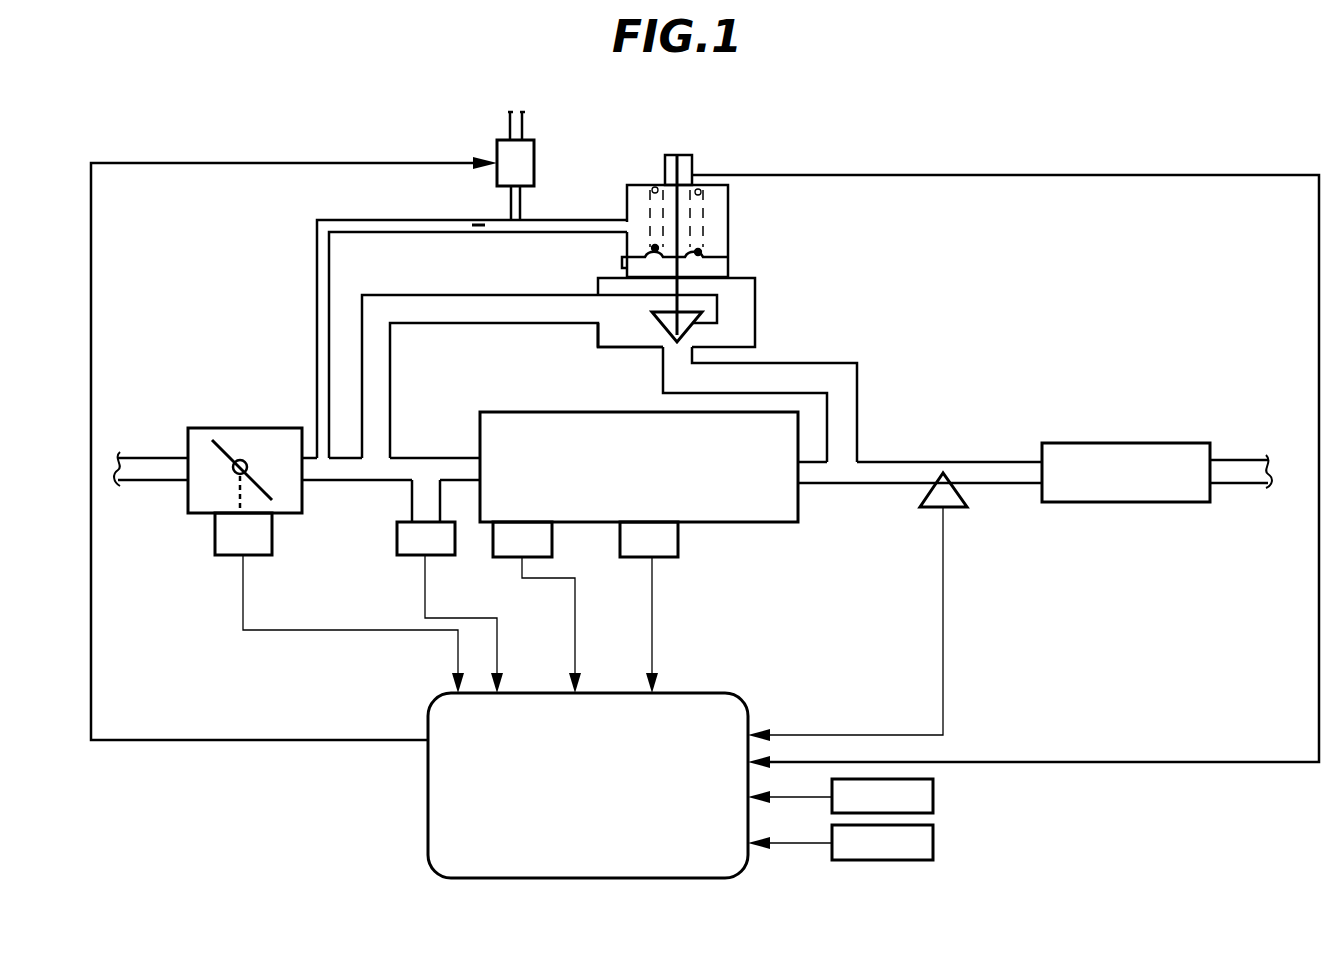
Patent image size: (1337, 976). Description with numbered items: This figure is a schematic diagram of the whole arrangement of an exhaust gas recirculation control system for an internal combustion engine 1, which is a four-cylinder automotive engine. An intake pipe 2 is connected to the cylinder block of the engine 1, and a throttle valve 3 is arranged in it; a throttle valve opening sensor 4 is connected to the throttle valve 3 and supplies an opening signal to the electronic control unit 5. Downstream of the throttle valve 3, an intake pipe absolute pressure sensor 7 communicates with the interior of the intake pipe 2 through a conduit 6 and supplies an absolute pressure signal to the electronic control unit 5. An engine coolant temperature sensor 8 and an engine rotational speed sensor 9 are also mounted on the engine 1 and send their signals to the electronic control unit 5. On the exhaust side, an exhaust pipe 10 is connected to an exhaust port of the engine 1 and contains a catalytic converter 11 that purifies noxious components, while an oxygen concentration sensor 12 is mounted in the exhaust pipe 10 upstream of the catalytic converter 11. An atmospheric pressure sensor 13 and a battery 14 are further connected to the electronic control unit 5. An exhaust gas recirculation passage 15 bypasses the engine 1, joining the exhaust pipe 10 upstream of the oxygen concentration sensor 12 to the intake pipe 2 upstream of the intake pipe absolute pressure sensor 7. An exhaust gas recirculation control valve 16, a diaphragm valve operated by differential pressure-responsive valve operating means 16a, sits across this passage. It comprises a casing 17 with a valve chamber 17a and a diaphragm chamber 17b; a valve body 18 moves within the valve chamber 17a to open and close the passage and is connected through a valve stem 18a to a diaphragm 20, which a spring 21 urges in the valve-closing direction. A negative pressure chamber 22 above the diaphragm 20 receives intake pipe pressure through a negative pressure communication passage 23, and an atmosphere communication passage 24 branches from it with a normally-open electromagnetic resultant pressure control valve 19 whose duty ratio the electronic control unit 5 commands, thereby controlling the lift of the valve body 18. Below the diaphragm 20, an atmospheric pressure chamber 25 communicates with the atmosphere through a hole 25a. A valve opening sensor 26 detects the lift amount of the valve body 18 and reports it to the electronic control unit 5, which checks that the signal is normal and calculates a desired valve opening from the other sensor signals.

The internal combustion engine 1 is at (585, 412).
The intake pipe 2 is at (313, 482).
The throttle valve 3 is at (215, 458).
The throttle valve opening sensor 4 is at (273, 535).
The electronic control unit 5 is at (693, 692).
The conduit 6 is at (412, 497).
The intake pipe absolute pressure sensor 7 is at (397, 543).
The engine coolant temperature sensor 8 is at (552, 540).
The engine rotational speed sensor 9 is at (665, 557).
The exhaust pipe 10 is at (970, 460).
The catalytic converter 11 is at (1082, 442).
The oxygen concentration sensor 12 is at (963, 507).
The atmospheric pressure sensor 13 is at (933, 802).
The battery 14 is at (933, 843).
The exhaust gas recirculation passage 15 is at (480, 323).
The exhaust gas recirculation control valve 16 is at (692, 252).
The valve operating means 16a is at (728, 217).
The casing 17 is at (638, 347).
The valve chamber 17a is at (757, 297).
The diaphragm chamber 17b is at (728, 198).
The valve body 18 is at (700, 322).
The valve stem 18a is at (680, 287).
The resultant pressure control valve 19 is at (534, 153).
The diaphragm 20 is at (713, 250).
The spring 21 is at (698, 187).
The negative pressure chamber 22 is at (638, 187).
The negative pressure communication passage 23 is at (317, 340).
The atmosphere communication passage 24 is at (523, 115).
The atmospheric pressure chamber 25 is at (627, 273).
The hole 25a is at (622, 263).
The valve opening sensor 26 is at (678, 152).